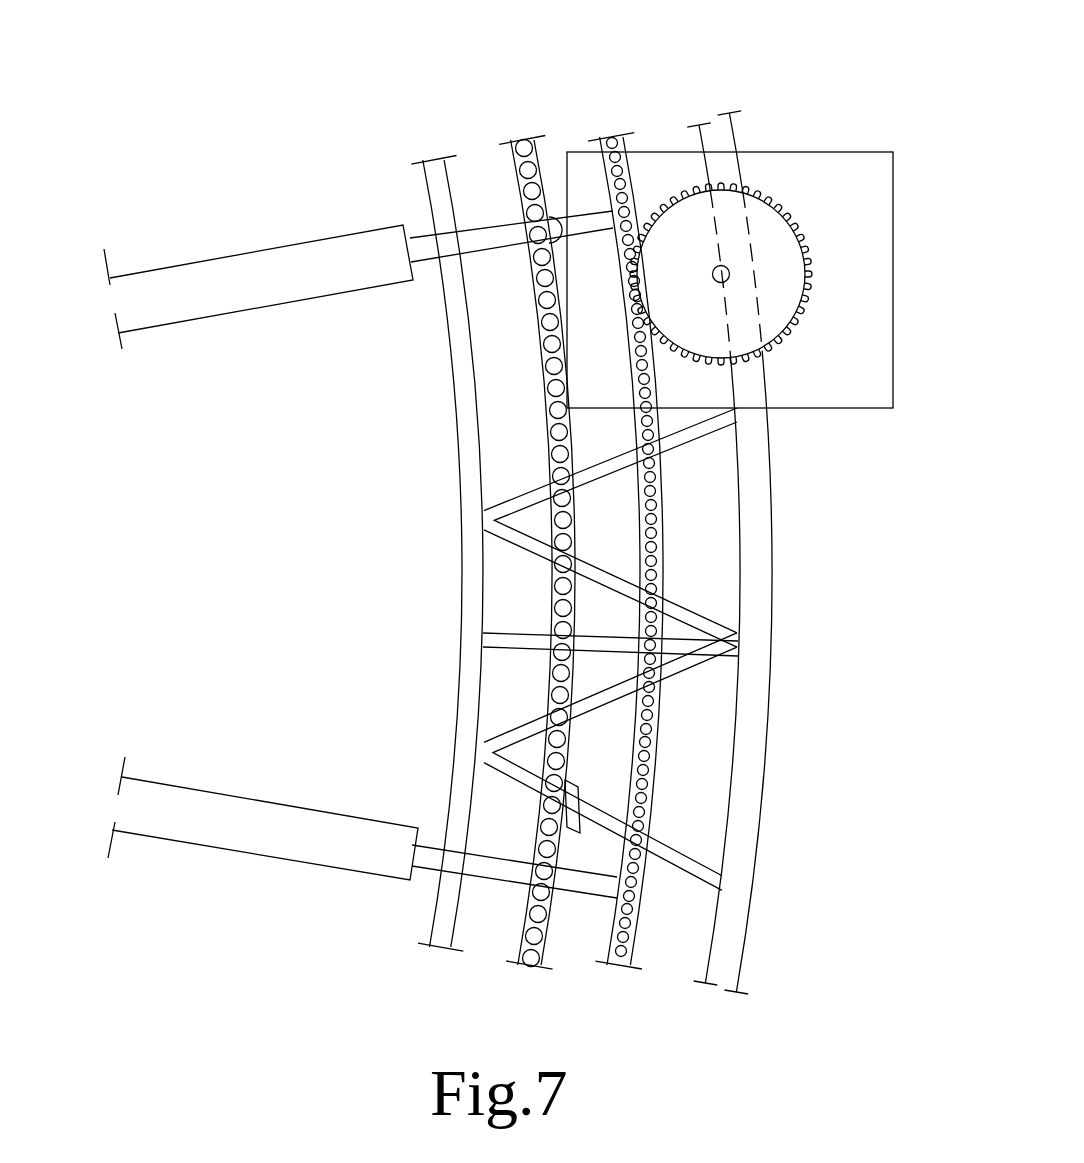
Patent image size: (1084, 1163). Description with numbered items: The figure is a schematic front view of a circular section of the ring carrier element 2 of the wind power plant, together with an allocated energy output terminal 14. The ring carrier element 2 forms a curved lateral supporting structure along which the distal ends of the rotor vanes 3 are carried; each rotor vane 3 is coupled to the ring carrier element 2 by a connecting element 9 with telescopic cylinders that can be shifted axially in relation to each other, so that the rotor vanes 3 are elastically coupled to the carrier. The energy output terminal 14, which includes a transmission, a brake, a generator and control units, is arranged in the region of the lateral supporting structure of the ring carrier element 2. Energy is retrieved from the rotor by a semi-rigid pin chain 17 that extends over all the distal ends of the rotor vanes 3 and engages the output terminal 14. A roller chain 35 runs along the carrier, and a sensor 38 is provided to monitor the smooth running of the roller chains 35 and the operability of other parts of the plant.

The ring carrier element 2 is at (603, 533).
The rotor vane 3 is at (278, 272).
The connecting element 9 is at (488, 240).
The energy output terminal 14 is at (803, 187).
The semi-rigid pin chain 17 is at (604, 139).
The roller chain 35 is at (557, 698).
The sensor 38 is at (572, 803).